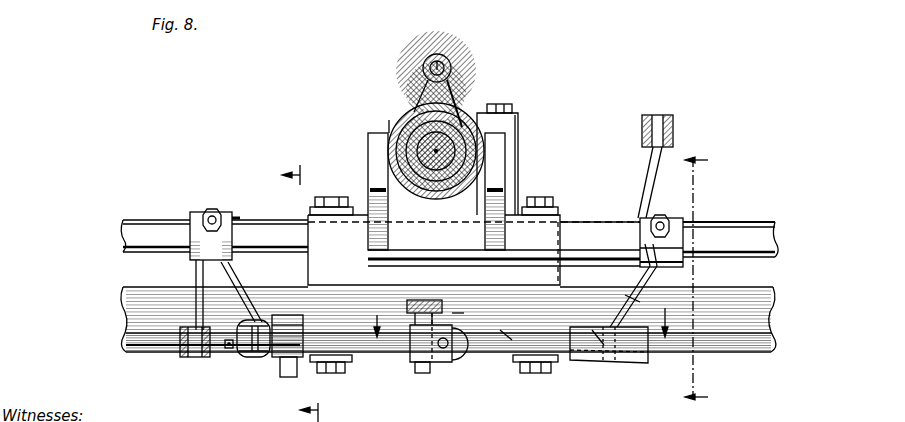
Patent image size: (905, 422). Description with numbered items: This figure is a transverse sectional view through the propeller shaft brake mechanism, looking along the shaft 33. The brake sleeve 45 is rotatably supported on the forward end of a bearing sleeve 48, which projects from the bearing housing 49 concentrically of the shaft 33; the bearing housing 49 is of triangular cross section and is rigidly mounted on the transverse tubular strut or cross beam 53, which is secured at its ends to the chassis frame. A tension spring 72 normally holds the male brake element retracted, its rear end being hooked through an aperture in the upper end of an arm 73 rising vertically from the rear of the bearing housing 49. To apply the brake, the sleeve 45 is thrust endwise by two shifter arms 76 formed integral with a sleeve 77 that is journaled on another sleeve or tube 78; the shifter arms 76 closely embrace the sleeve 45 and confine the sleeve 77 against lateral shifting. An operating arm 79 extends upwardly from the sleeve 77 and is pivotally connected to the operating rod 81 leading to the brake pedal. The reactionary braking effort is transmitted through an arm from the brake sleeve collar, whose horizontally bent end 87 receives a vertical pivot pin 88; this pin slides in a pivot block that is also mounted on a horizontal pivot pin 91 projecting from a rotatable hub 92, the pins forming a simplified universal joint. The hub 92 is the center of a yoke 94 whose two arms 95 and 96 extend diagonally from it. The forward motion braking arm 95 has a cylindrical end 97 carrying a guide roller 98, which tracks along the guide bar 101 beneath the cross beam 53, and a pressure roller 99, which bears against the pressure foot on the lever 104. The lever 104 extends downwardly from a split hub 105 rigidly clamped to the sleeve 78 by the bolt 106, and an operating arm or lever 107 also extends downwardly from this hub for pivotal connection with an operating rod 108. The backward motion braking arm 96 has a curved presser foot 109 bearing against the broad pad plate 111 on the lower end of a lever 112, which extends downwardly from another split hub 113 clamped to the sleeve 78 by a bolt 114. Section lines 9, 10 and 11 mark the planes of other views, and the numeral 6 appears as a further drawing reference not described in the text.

The bed 6 is at (152, 328).
The section line 9 is at (300, 287).
The section line 10 is at (521, 322).
The section line 11 is at (681, 287).
The shaft 33 is at (400, 120).
The brake sleeve 45 is at (462, 122).
The bearing sleeve 48 is at (394, 136).
The bearing housing 49 is at (366, 208).
The tubular strut or cross beam 53 is at (145, 336).
The tension spring 72 is at (449, 62).
The arm 73 is at (452, 82).
The shifter arms 76 is at (372, 158).
The sleeve 77 is at (580, 242).
The sleeve or tube 78 is at (162, 232).
The operating arm 79 is at (642, 182).
The operating rod 81 is at (674, 134).
The horizontally bent end 87 is at (406, 305).
The vertical pivot pin 88 is at (421, 364).
The horizontal pivot pin 91 is at (445, 349).
The hub 92 is at (456, 316).
The yoke 94 is at (505, 336).
The forward motion braking arm 95 is at (370, 350).
The rearward or backward motion braking arm 96 is at (516, 352).
The cylindrical end 97 is at (227, 350).
The guide roller 98 is at (298, 360).
The pressure roller 99 is at (252, 352).
The guide bar 101 is at (286, 376).
The lever 104 is at (248, 304).
The split hub 105 is at (244, 222).
The bolt 106 is at (220, 205).
The operating arm or lever 107 is at (192, 282).
The operating rod 108 is at (180, 350).
The curved presser foot 109 is at (600, 362).
The pad plate or face 111 is at (600, 338).
The lever 112 is at (625, 300).
The split hub 113 is at (676, 240).
The bolt 114 is at (660, 214).